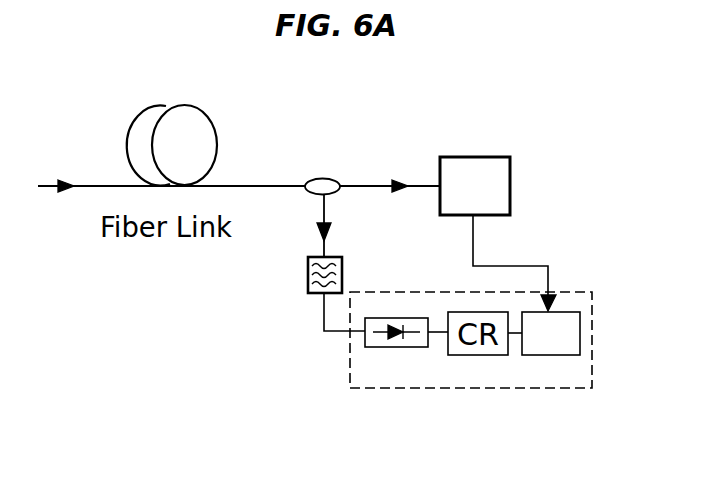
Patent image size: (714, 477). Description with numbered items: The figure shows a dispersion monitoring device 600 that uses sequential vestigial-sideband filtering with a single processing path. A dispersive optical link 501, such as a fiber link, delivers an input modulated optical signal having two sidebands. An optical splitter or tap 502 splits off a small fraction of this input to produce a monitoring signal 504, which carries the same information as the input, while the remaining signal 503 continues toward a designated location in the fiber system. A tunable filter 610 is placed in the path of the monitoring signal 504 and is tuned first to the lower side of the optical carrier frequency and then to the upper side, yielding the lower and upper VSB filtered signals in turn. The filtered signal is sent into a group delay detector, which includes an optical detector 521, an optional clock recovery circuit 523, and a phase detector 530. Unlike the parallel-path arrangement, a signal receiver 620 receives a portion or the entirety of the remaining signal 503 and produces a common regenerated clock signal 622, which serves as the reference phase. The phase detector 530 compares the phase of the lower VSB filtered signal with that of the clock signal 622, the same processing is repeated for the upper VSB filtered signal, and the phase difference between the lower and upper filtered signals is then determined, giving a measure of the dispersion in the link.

The dispersion monitoring device 600 is at (418, 79).
The dispersive optical link 501 is at (172, 105).
The optical splitter (tap) 502 is at (333, 179).
The remaining signal 503 is at (371, 184).
The monitoring signal 504 is at (322, 223).
The tunable filter 610 is at (343, 277).
The signal receiver 620 is at (503, 157).
The common regenerated clock signal 622 is at (477, 240).
The optical detector 521 is at (392, 318).
The clock recovery circuit 523 is at (477, 377).
The phase detector 530 is at (580, 338).